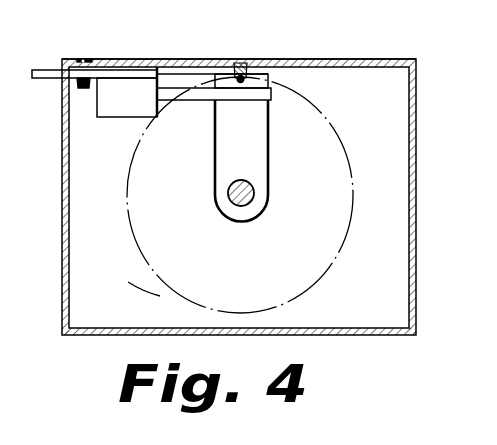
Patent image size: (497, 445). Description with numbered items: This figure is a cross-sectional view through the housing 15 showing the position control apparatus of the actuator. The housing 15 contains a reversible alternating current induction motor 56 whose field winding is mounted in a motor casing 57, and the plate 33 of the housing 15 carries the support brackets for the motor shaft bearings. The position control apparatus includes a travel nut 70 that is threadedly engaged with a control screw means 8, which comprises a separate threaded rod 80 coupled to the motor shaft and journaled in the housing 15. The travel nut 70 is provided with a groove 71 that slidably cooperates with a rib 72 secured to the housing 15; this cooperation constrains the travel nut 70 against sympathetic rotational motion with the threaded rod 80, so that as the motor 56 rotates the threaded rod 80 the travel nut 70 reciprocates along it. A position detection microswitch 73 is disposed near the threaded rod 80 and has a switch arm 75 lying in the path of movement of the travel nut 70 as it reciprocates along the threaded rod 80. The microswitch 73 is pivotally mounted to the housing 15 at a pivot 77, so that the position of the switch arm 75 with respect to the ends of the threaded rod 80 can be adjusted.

The control screw means 8 is at (232, 226).
The housing 15 is at (387, 58).
The plate 33 is at (295, 62).
The alternating current induction motor 56 is at (153, 276).
The motor casing 57 is at (114, 228).
The travel nut 70 is at (262, 152).
The groove 71 is at (247, 92).
The rib 72 is at (239, 70).
The microswitch 73 is at (113, 100).
The switch arm 75 is at (203, 95).
The pivotal mounting 77 is at (99, 57).
The threaded rod 80 is at (255, 193).